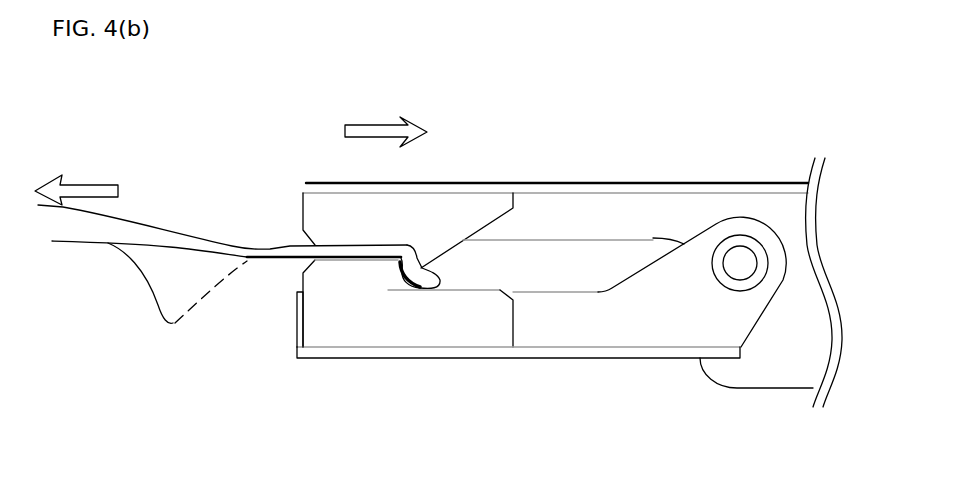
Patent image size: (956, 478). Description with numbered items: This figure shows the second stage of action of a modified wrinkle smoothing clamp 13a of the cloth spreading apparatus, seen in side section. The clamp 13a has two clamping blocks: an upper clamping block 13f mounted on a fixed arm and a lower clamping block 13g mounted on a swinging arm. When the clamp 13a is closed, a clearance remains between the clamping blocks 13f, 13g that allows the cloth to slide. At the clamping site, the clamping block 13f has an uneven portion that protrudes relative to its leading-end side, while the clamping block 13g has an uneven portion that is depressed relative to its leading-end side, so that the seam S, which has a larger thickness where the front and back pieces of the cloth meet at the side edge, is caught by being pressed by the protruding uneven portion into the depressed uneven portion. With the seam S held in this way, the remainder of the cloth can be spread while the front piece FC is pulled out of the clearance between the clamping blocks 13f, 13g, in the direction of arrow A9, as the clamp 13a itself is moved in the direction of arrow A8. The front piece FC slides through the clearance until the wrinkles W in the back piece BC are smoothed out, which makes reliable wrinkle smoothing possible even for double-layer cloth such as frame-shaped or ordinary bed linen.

The clamping block 13f is at (303, 217).
The clamping block 13g is at (302, 304).
The wrinkle smoothing clamp 13a is at (415, 358).
The front piece FC is at (239, 240).
The back piece BC is at (138, 248).
The wrinkles W is at (170, 327).
The seam S is at (400, 262).
The direction arrow A8 is at (367, 125).
The direction arrow A9 is at (85, 183).